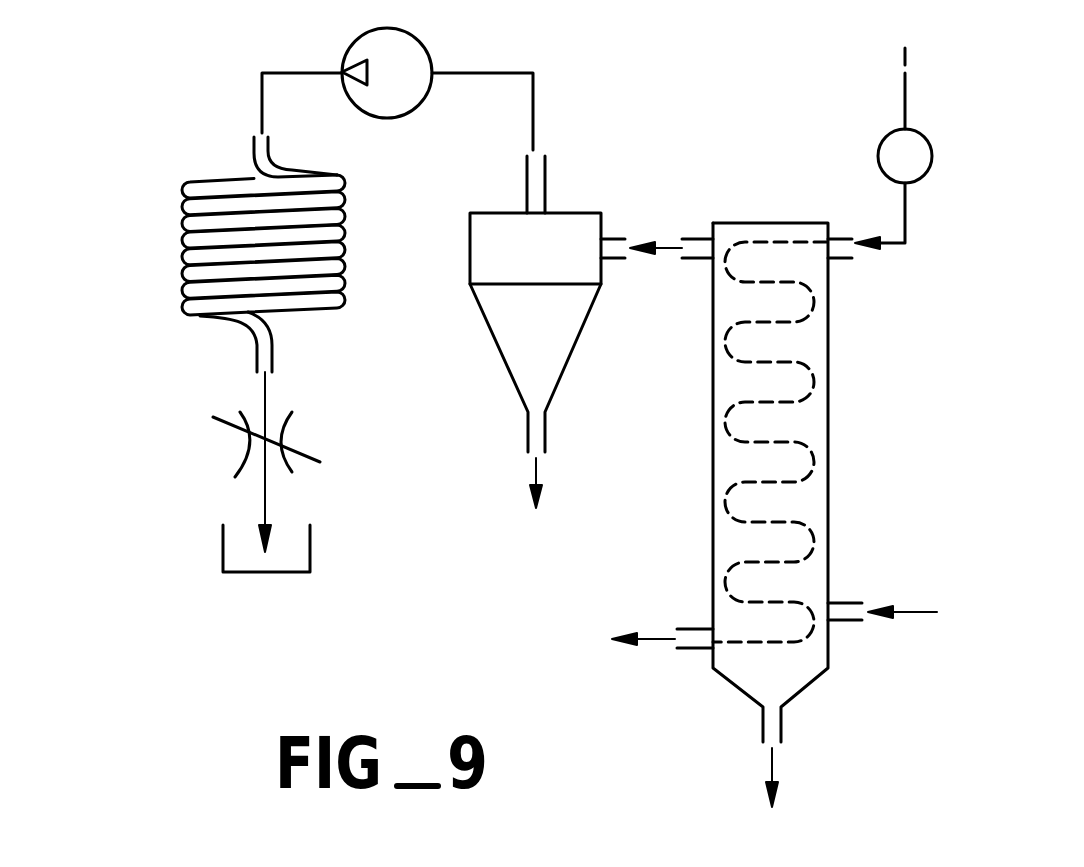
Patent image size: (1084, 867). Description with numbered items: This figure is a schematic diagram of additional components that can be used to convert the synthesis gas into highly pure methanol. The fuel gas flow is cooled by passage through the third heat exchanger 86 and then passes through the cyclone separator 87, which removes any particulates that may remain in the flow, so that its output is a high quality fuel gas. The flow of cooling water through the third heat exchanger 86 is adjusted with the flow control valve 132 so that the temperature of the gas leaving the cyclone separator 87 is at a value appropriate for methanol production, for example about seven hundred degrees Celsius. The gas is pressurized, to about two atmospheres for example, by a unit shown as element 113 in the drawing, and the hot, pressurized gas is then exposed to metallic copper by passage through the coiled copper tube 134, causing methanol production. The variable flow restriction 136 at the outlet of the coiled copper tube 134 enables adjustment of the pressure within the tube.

The pump 113 is at (417, 108).
The coiled copper tube 134 is at (183, 242).
The variable flow restriction 136 is at (323, 430).
The cyclone separator 87 is at (572, 353).
The third heat exchanger 86 is at (828, 417).
The flow control valve 132 is at (880, 140).